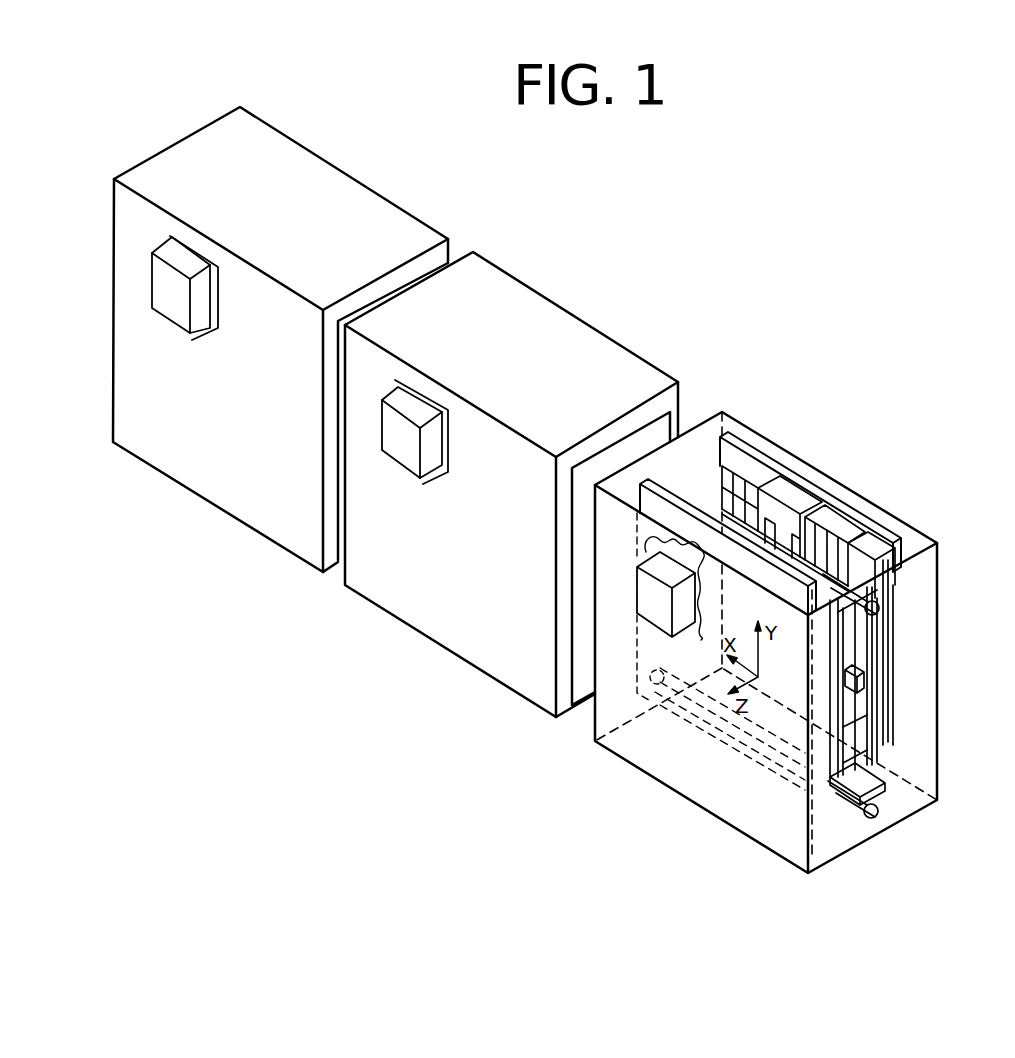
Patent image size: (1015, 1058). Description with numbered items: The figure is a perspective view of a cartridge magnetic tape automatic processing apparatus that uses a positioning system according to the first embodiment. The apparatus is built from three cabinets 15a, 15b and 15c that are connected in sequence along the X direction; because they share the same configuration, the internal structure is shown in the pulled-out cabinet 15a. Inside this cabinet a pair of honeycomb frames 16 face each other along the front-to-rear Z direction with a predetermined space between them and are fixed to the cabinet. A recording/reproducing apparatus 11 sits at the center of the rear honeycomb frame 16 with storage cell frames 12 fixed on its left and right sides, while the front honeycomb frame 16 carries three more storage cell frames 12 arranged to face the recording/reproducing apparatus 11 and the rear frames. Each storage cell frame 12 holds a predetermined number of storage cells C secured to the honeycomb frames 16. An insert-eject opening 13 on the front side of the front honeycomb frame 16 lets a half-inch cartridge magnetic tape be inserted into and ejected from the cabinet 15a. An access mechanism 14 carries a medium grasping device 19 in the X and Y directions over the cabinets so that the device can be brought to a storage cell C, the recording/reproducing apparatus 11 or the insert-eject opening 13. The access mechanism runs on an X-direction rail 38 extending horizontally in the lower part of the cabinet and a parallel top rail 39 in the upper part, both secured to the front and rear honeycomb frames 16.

The recording/reproducing apparatus 11 is at (787, 503).
The storage cell frame 12 is at (740, 465).
The insert-eject opening 13 is at (650, 625).
The access mechanism 14 is at (836, 738).
The cabinet 15a is at (664, 789).
The cabinet 15b is at (441, 647).
The cabinet 15c is at (189, 489).
The honeycomb frame 16 is at (707, 505).
The medium grasping device 19 is at (862, 681).
The X-direction rail 38 is at (868, 818).
The top rail 39 is at (865, 588).
The storage cell C is at (745, 468).